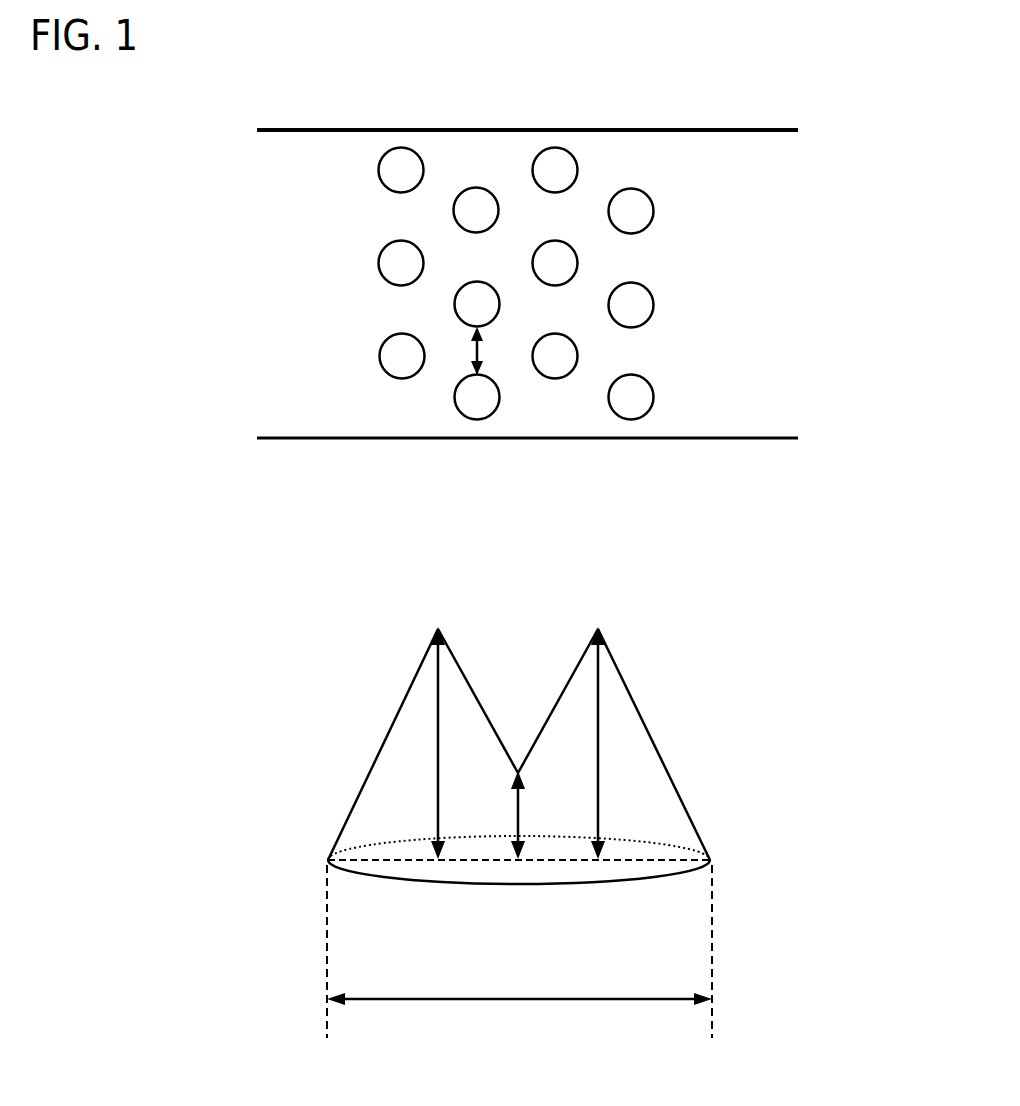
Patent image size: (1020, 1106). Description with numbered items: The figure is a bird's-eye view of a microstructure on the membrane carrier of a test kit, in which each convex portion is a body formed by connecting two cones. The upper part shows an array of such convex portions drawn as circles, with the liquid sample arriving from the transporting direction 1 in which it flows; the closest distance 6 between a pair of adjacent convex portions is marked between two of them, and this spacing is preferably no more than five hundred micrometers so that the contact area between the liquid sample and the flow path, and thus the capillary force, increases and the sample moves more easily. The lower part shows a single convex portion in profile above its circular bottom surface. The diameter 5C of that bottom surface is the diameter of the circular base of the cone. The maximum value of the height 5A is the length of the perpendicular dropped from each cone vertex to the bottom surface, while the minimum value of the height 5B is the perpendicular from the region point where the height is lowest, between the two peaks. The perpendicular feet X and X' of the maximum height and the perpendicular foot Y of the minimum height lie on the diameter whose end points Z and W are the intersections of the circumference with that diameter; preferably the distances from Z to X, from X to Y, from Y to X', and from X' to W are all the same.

The transporting direction 1 is at (205, 266).
The closest distance between convex portions 6 is at (483, 350).
The maximum value of the height 5A is at (438, 812).
The minimum value of the height 5B is at (520, 822).
The diameter of bottom surface 5C is at (519, 972).
The perpendicular foot of maximum height X is at (399, 922).
The perpendicular foot of minimum height Y is at (518, 866).
The perpendicular foot of maximum height X' is at (631, 922).
The intersection of circumference and diameter Z is at (328, 862).
The intersection of circumference and diameter W is at (710, 862).